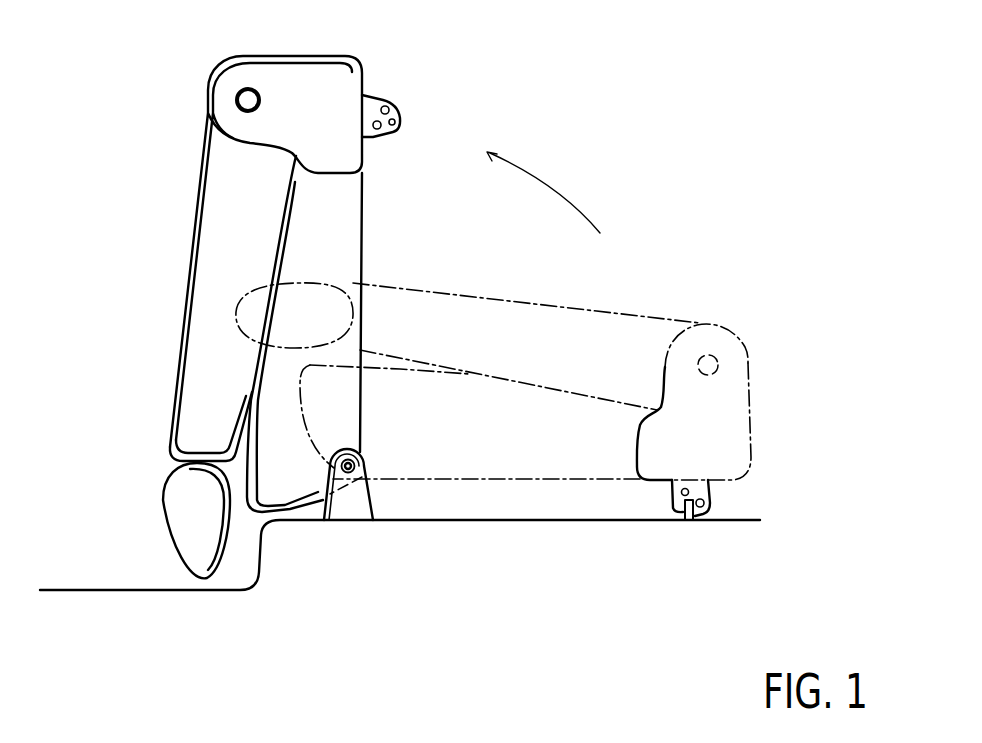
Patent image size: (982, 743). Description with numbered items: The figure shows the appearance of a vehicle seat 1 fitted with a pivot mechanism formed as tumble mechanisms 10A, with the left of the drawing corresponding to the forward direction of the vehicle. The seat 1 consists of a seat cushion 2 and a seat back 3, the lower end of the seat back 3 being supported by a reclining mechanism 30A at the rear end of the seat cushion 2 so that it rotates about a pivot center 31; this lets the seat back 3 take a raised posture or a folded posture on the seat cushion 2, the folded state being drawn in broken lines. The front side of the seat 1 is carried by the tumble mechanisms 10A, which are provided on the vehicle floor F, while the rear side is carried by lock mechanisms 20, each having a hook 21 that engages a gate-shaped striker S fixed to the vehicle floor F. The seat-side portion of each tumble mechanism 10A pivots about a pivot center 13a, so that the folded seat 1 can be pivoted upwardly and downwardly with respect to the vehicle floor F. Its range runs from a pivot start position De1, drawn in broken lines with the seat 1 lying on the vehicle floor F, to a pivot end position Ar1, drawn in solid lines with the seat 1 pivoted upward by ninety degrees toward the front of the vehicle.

The vehicle seat 1 is at (548, 95).
The seat cushion 2 is at (612, 420).
The seat back 3 is at (618, 337).
The tumble mechanism 10A is at (348, 510).
The pivot center 13a is at (356, 469).
The lock mechanism 20 is at (716, 503).
The hook 21 is at (697, 478).
The reclining mechanism 30A is at (730, 357).
The pivot center 31 is at (707, 374).
The pivot end position Ar1 is at (180, 289).
The pivot start position De1 is at (466, 292).
The vehicle floor F is at (477, 520).
The striker S is at (688, 522).